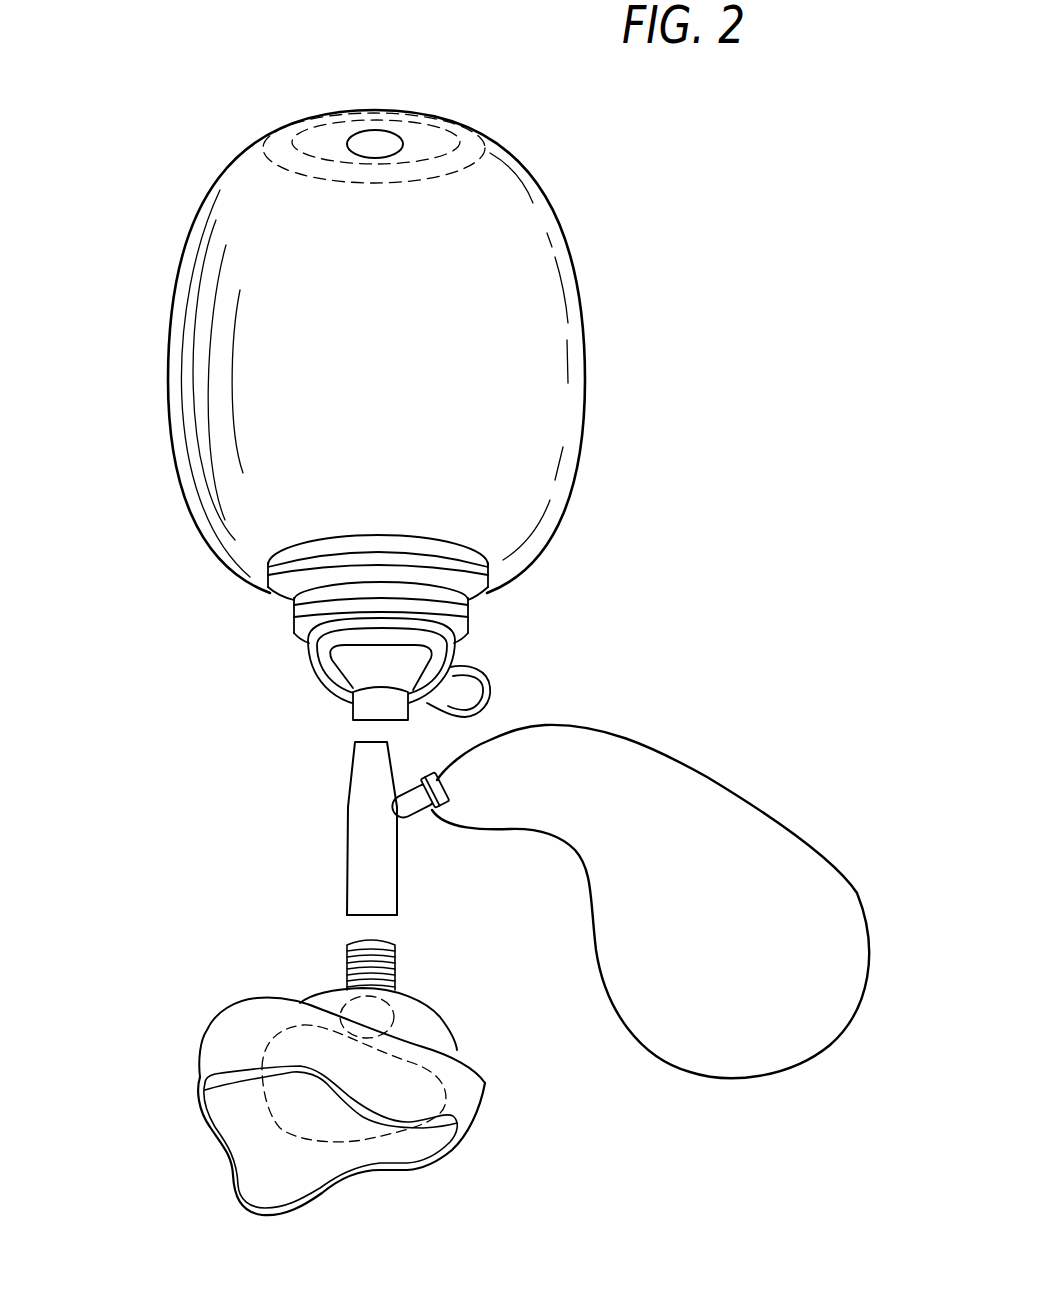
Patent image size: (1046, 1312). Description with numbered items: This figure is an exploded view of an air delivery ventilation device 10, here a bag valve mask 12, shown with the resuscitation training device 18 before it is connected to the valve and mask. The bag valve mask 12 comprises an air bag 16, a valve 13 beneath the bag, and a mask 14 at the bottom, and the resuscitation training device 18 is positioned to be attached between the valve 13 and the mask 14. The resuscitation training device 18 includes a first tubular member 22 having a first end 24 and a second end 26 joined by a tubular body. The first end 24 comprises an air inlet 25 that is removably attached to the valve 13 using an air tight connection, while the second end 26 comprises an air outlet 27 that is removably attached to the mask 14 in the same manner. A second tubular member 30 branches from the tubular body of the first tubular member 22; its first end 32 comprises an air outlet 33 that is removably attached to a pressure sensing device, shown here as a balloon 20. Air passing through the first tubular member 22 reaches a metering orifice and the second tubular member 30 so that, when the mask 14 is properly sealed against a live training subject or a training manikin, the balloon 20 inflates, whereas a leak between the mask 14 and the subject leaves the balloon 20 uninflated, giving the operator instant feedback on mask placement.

The air delivery ventilation device 10 is at (148, 148).
The bag valve mask 12 is at (420, 351).
The valve 13 is at (468, 620).
The mask 14 is at (483, 1095).
The air bag 16 is at (583, 297).
The resuscitation training device 18 is at (352, 866).
The balloon 20 is at (849, 880).
The first tubular member 22 is at (350, 785).
The first end 24 is at (388, 742).
The air inlet 25 is at (367, 742).
The second end 26 is at (400, 915).
The air outlet 27 is at (352, 916).
The second tubular member 30 is at (408, 826).
The first end 32 is at (498, 777).
The air outlet 33 is at (437, 781).